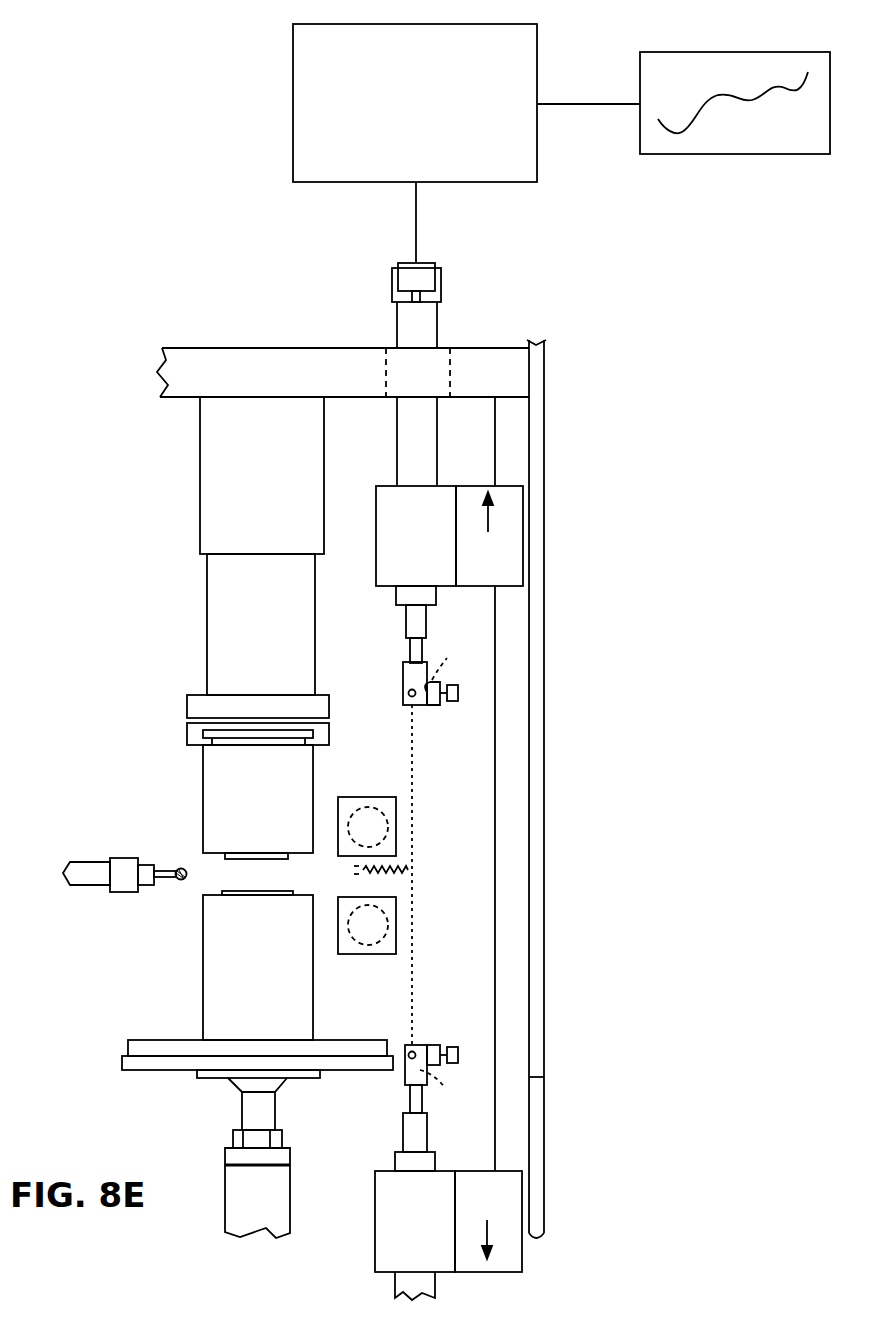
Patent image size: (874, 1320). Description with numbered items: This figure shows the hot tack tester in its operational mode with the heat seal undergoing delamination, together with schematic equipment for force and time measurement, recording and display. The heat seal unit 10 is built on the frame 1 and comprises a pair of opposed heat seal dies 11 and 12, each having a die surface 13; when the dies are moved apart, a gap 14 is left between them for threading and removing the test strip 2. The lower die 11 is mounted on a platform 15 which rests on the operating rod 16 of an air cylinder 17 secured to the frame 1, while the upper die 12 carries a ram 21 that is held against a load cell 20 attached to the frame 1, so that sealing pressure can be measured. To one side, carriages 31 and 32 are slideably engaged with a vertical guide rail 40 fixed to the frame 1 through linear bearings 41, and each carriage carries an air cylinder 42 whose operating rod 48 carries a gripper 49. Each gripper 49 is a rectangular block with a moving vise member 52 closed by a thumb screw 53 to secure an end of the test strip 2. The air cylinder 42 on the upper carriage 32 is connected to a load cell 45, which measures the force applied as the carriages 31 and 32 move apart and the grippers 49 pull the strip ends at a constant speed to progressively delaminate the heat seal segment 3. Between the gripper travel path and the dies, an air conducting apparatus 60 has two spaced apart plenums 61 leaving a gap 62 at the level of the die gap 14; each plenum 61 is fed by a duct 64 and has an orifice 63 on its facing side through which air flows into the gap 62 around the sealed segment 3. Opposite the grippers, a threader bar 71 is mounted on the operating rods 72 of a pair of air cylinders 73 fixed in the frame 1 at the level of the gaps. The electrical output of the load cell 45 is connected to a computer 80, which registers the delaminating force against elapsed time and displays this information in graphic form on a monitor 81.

The frame 1 is at (162, 372).
The test strip 2 is at (410, 738).
The heat seal segment 3 is at (390, 871).
The heat seal unit 10 is at (198, 837).
The heat seal die 11 is at (205, 885).
The heat seal die 12 is at (215, 780).
The die surface 13 is at (257, 865).
The gap 14 is at (212, 962).
The platform 15 is at (128, 1052).
The operating rod 16 is at (250, 1108).
The air cylinder 17 is at (232, 1184).
The load cell 20 is at (200, 472).
The ram 21 is at (220, 617).
The carriage 31 is at (415, 1235).
The carriage 32 is at (416, 536).
The vertical guide rail 40 is at (426, 861).
The linear bearing 41 is at (489, 879).
The air cylinder 42 is at (405, 443).
The load cell 45 is at (428, 269).
The operating rod 48 is at (412, 652).
The gripper 49 is at (405, 688).
The vise member 52 is at (425, 705).
The thumb screw 53 is at (456, 697).
The air conducting apparatus 60 is at (352, 894).
The plenum 61 is at (355, 797).
The gap 62 is at (412, 875).
The orifice 63 is at (345, 856).
The duct 64 is at (378, 808).
The threader bar 71 is at (180, 868).
The operating rod 72 is at (157, 870).
The air cylinder 73 is at (75, 867).
The computer 80 is at (293, 168).
The monitor 81 is at (643, 152).